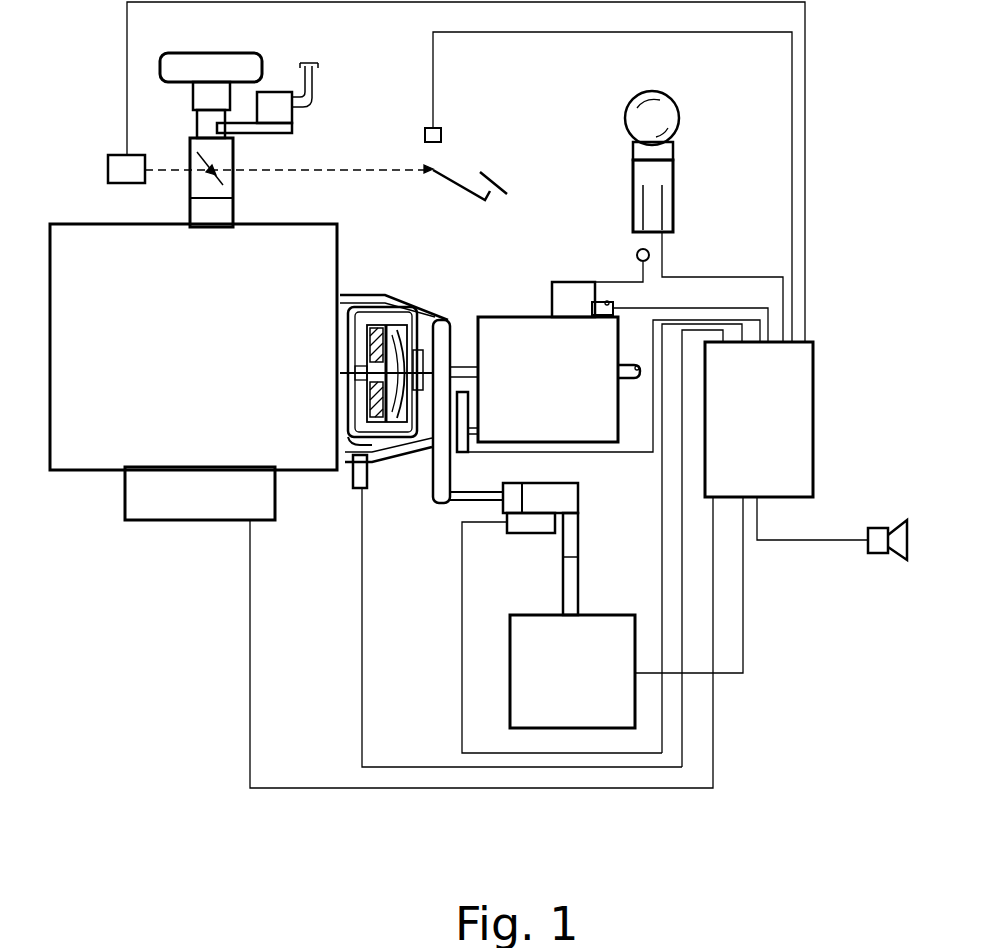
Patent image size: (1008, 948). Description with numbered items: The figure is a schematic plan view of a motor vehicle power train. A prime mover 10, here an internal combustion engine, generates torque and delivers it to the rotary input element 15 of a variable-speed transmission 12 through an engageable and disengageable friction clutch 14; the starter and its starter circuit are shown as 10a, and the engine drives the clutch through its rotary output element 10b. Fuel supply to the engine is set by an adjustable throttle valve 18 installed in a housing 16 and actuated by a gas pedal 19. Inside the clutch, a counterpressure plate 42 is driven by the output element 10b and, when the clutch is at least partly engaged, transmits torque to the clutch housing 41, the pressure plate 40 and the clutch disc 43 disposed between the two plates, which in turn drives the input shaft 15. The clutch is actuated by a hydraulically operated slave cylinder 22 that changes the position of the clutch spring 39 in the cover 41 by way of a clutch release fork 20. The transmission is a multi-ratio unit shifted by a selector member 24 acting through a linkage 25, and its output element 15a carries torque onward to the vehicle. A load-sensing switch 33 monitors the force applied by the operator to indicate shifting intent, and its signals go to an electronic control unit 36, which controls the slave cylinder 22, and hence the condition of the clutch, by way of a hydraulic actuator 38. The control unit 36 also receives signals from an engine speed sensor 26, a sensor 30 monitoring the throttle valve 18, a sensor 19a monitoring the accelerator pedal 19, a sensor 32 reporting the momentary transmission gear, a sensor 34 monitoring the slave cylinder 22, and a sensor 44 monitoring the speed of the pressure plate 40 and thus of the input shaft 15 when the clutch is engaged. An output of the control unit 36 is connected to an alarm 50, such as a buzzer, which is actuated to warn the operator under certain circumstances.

The prime mover 10 is at (216, 352).
The starter 10a is at (222, 509).
The rotary output element 10b is at (352, 372).
The variable-speed transmission 12 is at (562, 384).
The friction clutch 14 is at (373, 292).
The rotary input element 15 is at (480, 365).
The output element 15a is at (640, 380).
The housing 16 is at (238, 180).
The throttle valve 18 is at (223, 185).
The gas pedal 19 is at (455, 175).
The sensor 19a is at (442, 128).
The clutch release fork 20 is at (436, 498).
The slave cylinder 22 is at (580, 500).
The selector member 24 is at (675, 178).
The linkage 25 is at (570, 282).
The engine speed sensor 26 is at (352, 478).
The sensor 30 is at (108, 168).
The sensor 32 is at (603, 302).
The load-sensing switch 33 is at (666, 148).
The sensor 34 is at (533, 533).
The electronic control unit 36 is at (780, 432).
The hydraulic actuator 38 is at (588, 694).
The clutch spring 39 is at (398, 340).
The pressure plate 40 is at (393, 322).
The housing 41 is at (350, 445).
The counterpressure plate 42 is at (355, 325).
The clutch disc 43 is at (360, 405).
The sensor 44 is at (470, 412).
The alarm 50 is at (870, 535).